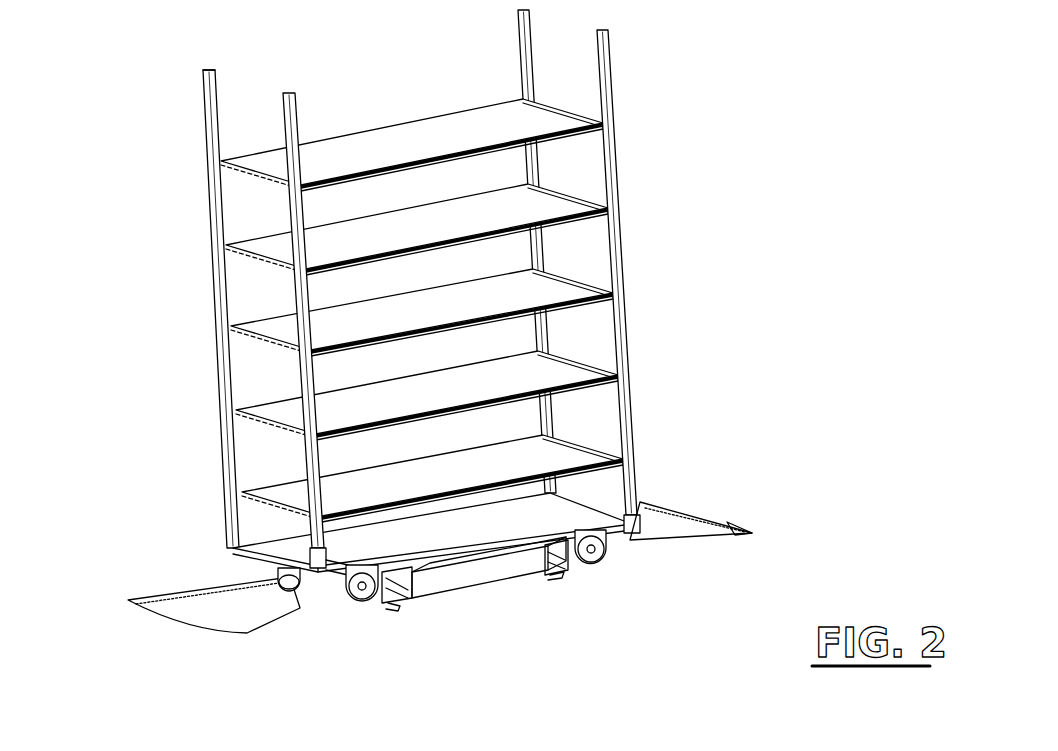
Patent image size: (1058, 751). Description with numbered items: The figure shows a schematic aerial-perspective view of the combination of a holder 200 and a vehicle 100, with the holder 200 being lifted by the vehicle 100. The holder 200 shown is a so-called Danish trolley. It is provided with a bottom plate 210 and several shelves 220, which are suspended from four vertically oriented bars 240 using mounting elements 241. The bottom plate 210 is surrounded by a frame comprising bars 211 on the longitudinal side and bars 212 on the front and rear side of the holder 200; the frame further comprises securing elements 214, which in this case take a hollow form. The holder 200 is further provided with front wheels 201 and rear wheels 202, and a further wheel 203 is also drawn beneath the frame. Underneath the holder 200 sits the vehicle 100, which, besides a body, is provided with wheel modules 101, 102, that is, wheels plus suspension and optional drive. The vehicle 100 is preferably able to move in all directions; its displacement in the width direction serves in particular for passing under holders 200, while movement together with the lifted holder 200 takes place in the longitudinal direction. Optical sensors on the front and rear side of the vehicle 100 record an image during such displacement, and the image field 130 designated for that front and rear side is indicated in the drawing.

The vehicle 100 is at (490, 567).
The wheel module 101 is at (393, 607).
The wheel module 102 is at (560, 576).
The image field 130 is at (730, 528).
The holder 200 is at (668, 232).
The front wheel 201 is at (353, 603).
The rear wheel 202 is at (607, 550).
The rear caster 203 is at (285, 583).
The bottom plate 210 is at (563, 507).
The bar 211 is at (273, 543).
The bar 212 is at (250, 560).
The securing element 214 is at (640, 503).
The shelf 220 is at (257, 167).
The vertically oriented bar 240 is at (200, 90).
The mounting element 241 is at (607, 310).